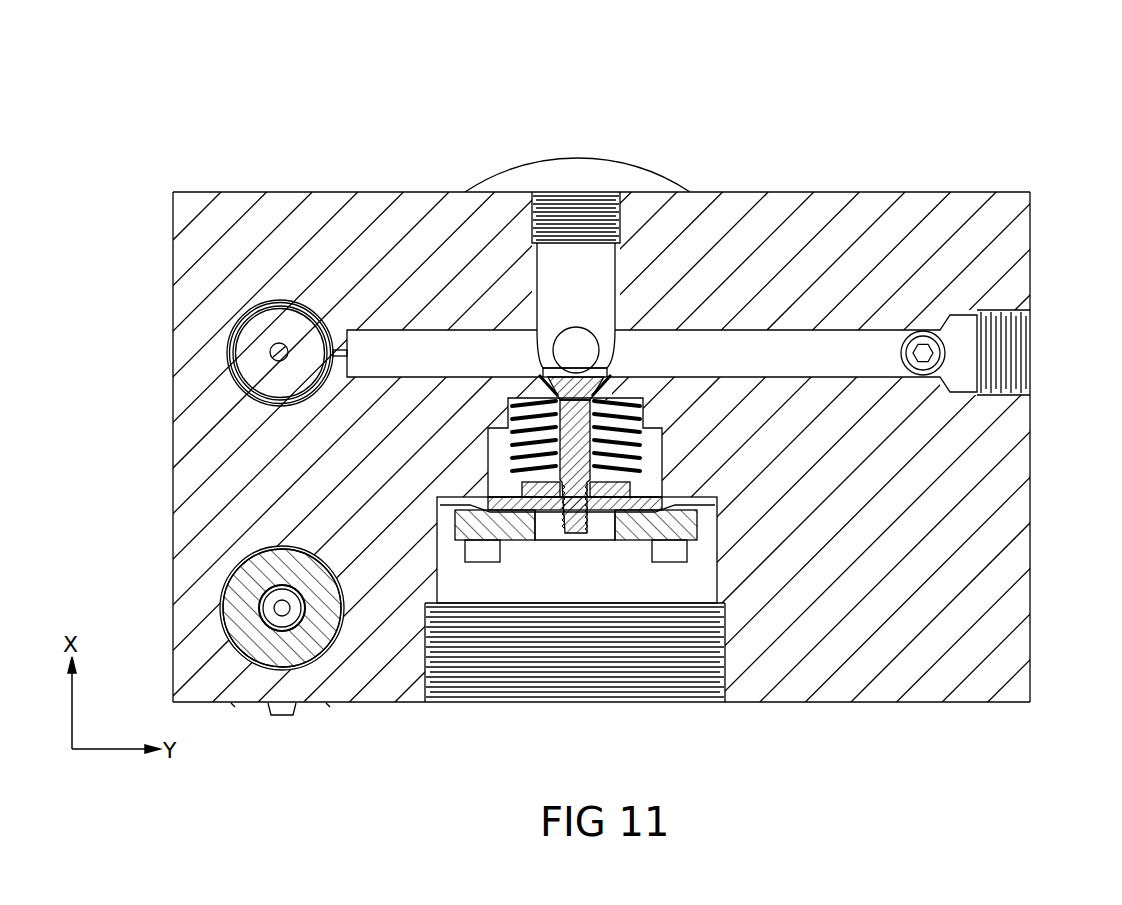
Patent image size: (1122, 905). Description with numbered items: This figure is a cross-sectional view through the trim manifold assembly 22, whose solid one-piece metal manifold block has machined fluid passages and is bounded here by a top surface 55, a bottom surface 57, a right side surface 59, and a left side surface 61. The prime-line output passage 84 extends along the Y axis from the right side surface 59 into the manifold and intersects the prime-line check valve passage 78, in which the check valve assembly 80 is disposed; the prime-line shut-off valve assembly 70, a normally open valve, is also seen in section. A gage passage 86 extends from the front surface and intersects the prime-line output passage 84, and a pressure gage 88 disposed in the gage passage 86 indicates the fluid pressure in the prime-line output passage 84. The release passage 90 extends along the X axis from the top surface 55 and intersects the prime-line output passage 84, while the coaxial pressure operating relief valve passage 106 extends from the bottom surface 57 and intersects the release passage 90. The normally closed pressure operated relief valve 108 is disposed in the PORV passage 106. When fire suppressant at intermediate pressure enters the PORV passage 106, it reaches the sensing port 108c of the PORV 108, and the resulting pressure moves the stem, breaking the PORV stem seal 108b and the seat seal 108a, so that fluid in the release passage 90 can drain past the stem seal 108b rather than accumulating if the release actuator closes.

The trim manifold assembly 22 is at (975, 120).
The top surface 55 is at (291, 192).
The bottom surface 57 is at (923, 702).
The right side surface 59 is at (1030, 625).
The left side surface 61 is at (173, 265).
The prime-line shut-off valve assembly 70 is at (228, 603).
The prime-line check valve passage 78 is at (236, 323).
The check valve assembly 80 is at (263, 365).
The prime-line output passage 84 is at (797, 345).
The gage passage 86 is at (578, 348).
The pressure gage 88 is at (593, 168).
The release passage 90 is at (560, 287).
The pressure operating relief valve (PORV) passage 106 is at (588, 675).
The pressure operated relief valve (PORV) 108 is at (600, 567).
The seat seal 108a is at (540, 393).
The PORV stem seal 108b is at (583, 470).
The sensing port 108c is at (547, 525).